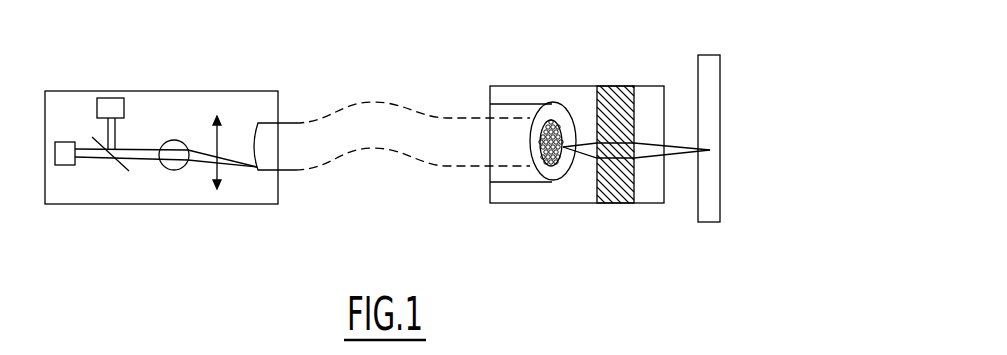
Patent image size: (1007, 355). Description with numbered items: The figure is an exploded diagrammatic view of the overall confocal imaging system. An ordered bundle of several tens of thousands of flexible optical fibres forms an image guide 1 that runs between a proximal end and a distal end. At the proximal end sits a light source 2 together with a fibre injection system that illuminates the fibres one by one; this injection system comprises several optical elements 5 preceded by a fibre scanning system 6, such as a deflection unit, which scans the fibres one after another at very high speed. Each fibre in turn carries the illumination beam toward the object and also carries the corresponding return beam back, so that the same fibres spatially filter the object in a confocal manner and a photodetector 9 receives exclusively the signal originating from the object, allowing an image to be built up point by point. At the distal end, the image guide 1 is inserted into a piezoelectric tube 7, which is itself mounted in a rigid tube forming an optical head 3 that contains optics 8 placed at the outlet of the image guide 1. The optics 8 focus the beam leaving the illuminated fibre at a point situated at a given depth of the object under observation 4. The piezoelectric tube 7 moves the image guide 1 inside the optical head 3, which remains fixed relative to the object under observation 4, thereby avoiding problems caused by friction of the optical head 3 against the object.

The image guide 1 is at (362, 138).
The light source 2 is at (67, 160).
The optical head 3 is at (557, 203).
The object under observation 4 is at (712, 62).
The optical elements 5 is at (225, 172).
The fibre scanning system 6 is at (167, 170).
The piezoelectric tube 7 is at (503, 112).
The optics 8 is at (623, 190).
The photodetector 9 is at (110, 108).